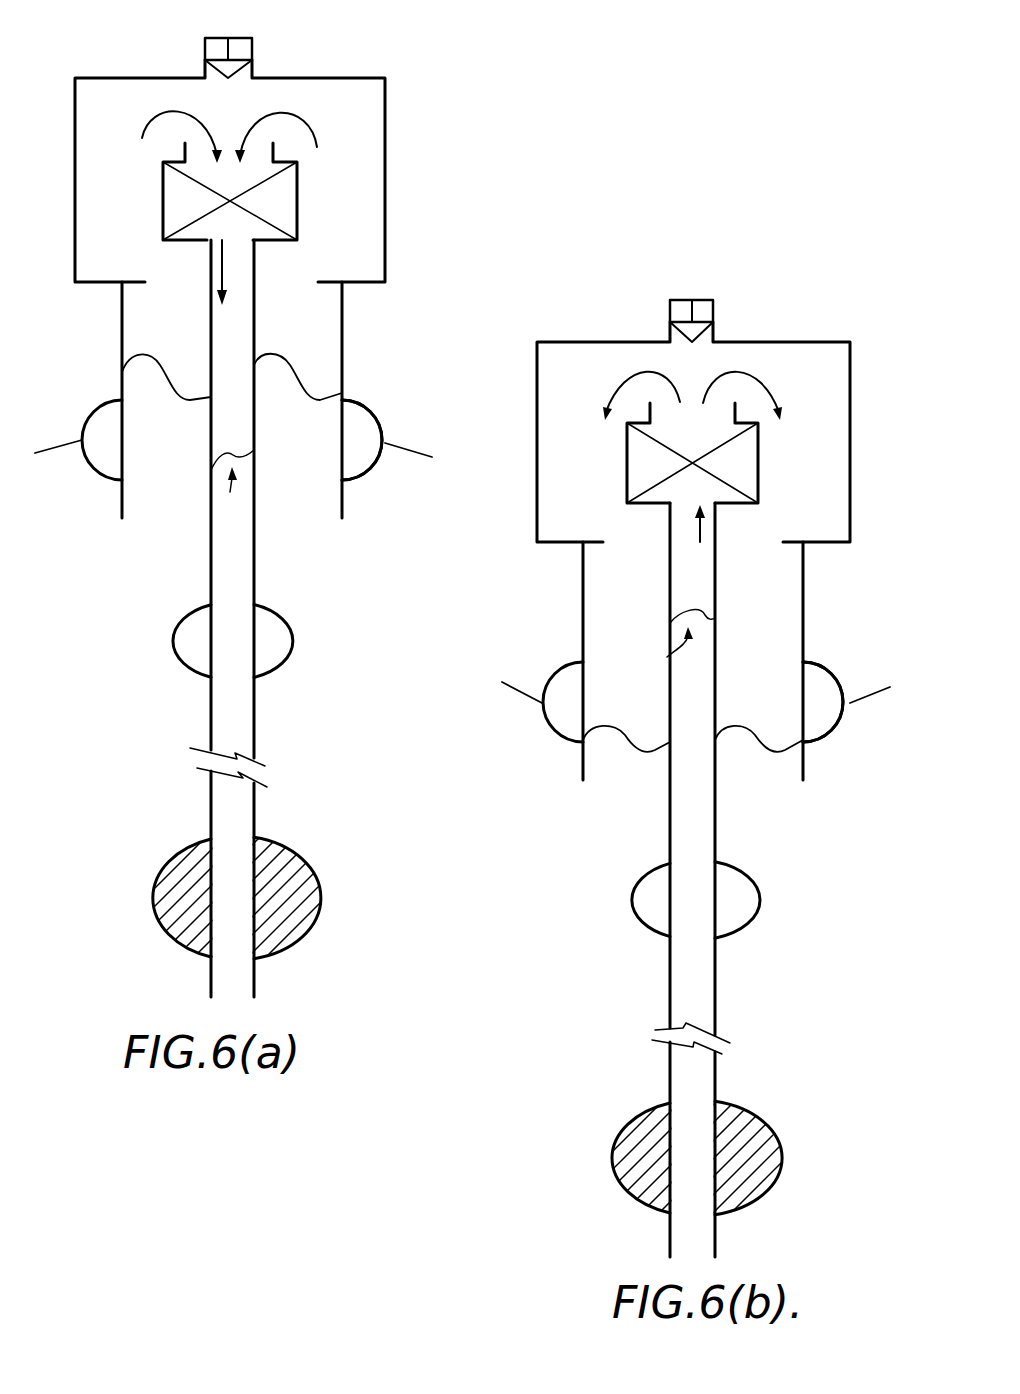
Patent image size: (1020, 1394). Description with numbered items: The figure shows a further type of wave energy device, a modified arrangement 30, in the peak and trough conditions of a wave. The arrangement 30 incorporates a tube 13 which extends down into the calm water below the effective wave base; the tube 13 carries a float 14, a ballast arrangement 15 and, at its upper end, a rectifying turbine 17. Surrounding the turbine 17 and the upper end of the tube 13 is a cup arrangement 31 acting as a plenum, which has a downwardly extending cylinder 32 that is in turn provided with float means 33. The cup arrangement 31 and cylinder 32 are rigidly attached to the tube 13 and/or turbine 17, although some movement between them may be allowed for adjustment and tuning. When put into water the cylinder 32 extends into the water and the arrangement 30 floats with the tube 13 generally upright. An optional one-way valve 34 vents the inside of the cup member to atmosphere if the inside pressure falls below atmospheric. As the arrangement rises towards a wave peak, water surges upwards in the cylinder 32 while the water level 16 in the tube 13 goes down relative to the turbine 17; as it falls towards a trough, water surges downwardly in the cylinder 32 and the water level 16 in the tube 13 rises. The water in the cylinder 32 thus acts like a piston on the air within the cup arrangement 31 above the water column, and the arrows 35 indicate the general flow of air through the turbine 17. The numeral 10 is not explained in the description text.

In FIG. 6A, the coil / seal ring section 10 is at (57, 445).
In FIG. 6B, the coil / seal ring section 10 is at (514, 699).
In FIG. 6A, the tube 13 is at (257, 725).
In FIG. 6B, the tube 13 is at (667, 818).
In FIG. 6A, the float 14 is at (295, 640).
In FIG. 6B, the float 14 is at (653, 940).
In FIG. 6A, the ballast arrangement 15 is at (293, 953).
In FIG. 6B, the ballast arrangement 15 is at (637, 1203).
In FIG. 6A, the water level 16 is at (230, 492).
In FIG. 6B, the water level 16 is at (668, 656).
In FIG. 6A, the rectifying turbine 17 is at (300, 210).
In FIG. 6B, the rectifying turbine 17 is at (763, 481).
In FIG. 6A, the modified arrangement 30 is at (407, 100).
In FIG. 6B, the modified arrangement 30 is at (560, 322).
In FIG. 6A, the cup arrangement 31 is at (375, 71).
In FIG. 6B, the cup arrangement 31 is at (830, 332).
In FIG. 6A, the cylinder 32 is at (344, 311).
In FIG. 6B, the cylinder 32 is at (805, 626).
In FIG. 6A, the float means 33 is at (367, 478).
In FIG. 6B, the float means 33 is at (818, 741).
In FIG. 6A, the one-way valve 34 is at (240, 36).
In FIG. 6B, the one-way valve 34 is at (703, 300).
In FIG. 6A, the arrows 35 is at (168, 107).
In FIG. 6B, the arrows 35 is at (633, 368).